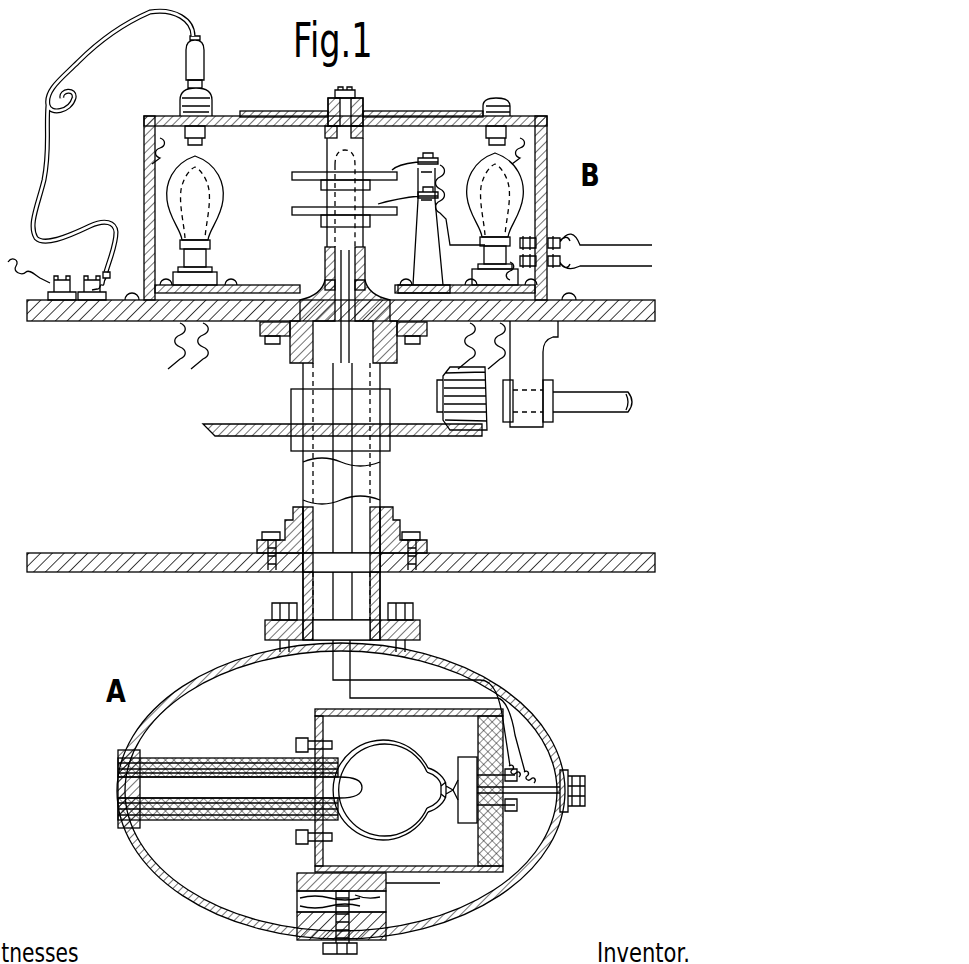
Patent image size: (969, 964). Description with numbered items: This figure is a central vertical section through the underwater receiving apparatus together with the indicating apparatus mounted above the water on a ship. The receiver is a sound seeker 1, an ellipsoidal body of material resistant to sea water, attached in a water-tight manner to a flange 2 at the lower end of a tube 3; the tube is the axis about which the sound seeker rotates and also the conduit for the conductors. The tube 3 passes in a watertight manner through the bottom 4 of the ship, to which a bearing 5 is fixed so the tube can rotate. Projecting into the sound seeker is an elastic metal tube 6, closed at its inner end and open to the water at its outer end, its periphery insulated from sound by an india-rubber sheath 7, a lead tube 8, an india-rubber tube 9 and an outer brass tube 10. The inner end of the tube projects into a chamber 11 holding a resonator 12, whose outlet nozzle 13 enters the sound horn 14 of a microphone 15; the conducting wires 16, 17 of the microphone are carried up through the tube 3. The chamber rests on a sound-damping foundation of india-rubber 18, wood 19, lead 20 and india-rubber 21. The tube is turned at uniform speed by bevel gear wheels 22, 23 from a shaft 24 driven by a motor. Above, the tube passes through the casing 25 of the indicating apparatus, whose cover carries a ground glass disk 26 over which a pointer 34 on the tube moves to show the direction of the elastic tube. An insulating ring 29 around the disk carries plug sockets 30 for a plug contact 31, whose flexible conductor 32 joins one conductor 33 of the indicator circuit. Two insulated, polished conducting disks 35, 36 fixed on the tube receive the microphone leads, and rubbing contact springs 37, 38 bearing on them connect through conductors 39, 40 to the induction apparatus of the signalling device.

The sound seeker 1 is at (527, 709).
The flange 2 is at (422, 631).
The tube 3 is at (325, 257).
The bottom of the ship 4 is at (598, 572).
The bearing 5 is at (396, 531).
The elastic metal tube 6 is at (260, 788).
The india-rubber sheath 7 is at (115, 794).
The lead tube 8 is at (118, 806).
The india-rubber tube 9 is at (121, 818).
The brass tube 10 is at (126, 829).
The chamber 11 is at (399, 790).
The resonator 12 is at (380, 790).
The outlet nozzle 13 is at (433, 799).
The sound horn 14 is at (446, 773).
The microphone 15 is at (466, 819).
The conducting wire 16 is at (328, 278).
The conducting wire 17 is at (350, 279).
The india-rubber layer 18 is at (382, 942).
The wood layer 19 is at (387, 903).
The lead layer 20 is at (440, 883).
The india-rubber layer 21 is at (297, 880).
The bevel gear wheel 22 is at (220, 438).
The bevel gear wheel 23 is at (443, 392).
The shaft 24 is at (591, 410).
The casing 25 is at (548, 155).
The ground glass disk 26 is at (282, 127).
The ring of insulating material 29 is at (523, 121).
The plug socket 30 is at (211, 112).
The plug contact 31 is at (200, 67).
The flexible conductor 32 is at (102, 52).
The conductor 33 is at (18, 278).
The pointer 34 is at (290, 111).
The conducting disk 35 is at (291, 177).
The conducting disk 36 is at (291, 211).
The rubbing contact spring 37 is at (413, 165).
The rubbing contact spring 38 is at (407, 205).
The conductor 39 is at (632, 226).
The conductor 40 is at (640, 281).